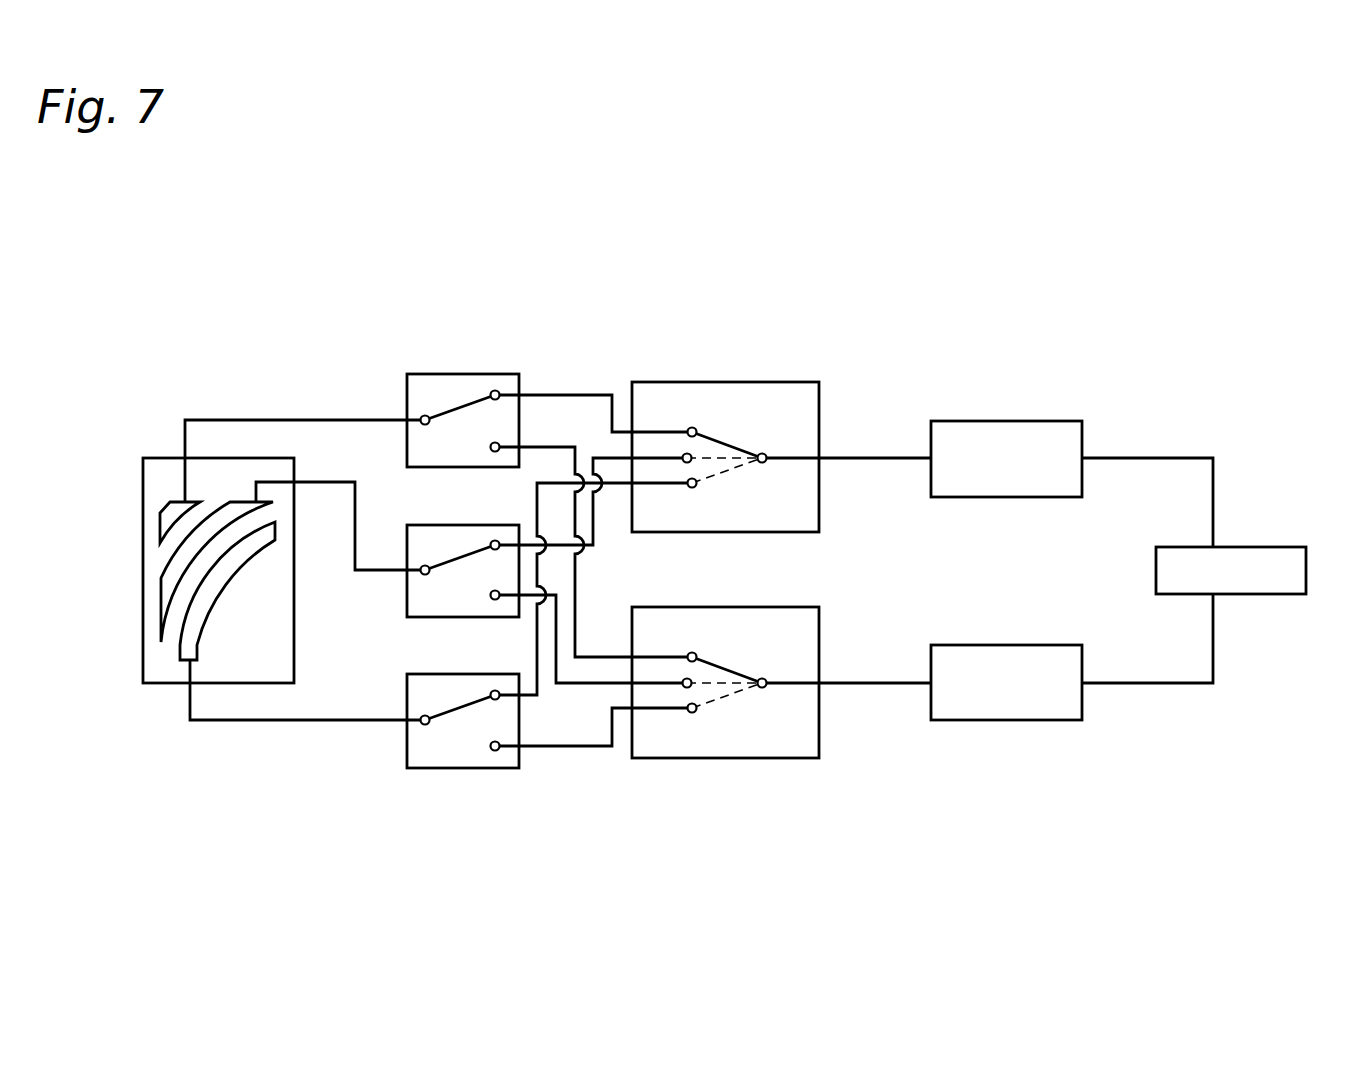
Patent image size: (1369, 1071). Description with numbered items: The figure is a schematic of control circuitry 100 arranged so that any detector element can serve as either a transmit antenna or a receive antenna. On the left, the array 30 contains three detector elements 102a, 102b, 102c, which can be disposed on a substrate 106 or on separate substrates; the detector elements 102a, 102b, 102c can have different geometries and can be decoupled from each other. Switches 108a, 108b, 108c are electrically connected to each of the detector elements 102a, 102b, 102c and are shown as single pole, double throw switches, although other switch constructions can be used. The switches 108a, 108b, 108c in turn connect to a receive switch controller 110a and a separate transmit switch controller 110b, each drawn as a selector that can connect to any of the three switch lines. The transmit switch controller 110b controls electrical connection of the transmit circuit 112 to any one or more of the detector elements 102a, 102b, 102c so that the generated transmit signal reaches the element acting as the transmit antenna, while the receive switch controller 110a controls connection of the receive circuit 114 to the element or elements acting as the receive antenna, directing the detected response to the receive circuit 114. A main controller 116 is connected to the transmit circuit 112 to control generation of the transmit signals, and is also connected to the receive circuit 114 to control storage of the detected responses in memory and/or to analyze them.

The ultrasonic transducer system 100 is at (958, 326).
The array 30 is at (168, 684).
The detector element 102a is at (173, 652).
The detector element 102b is at (162, 610).
The detector element 102c is at (165, 507).
The substrate 106 is at (167, 470).
The switch 108a is at (478, 768).
The switch 108b is at (486, 525).
The switch 108c is at (487, 372).
The receive switch controller 110a is at (760, 758).
The transmit switch controller 110b is at (667, 382).
The transmit circuit 112 is at (1045, 420).
The receive circuit 114 is at (1063, 722).
The main controller 116 is at (1278, 547).